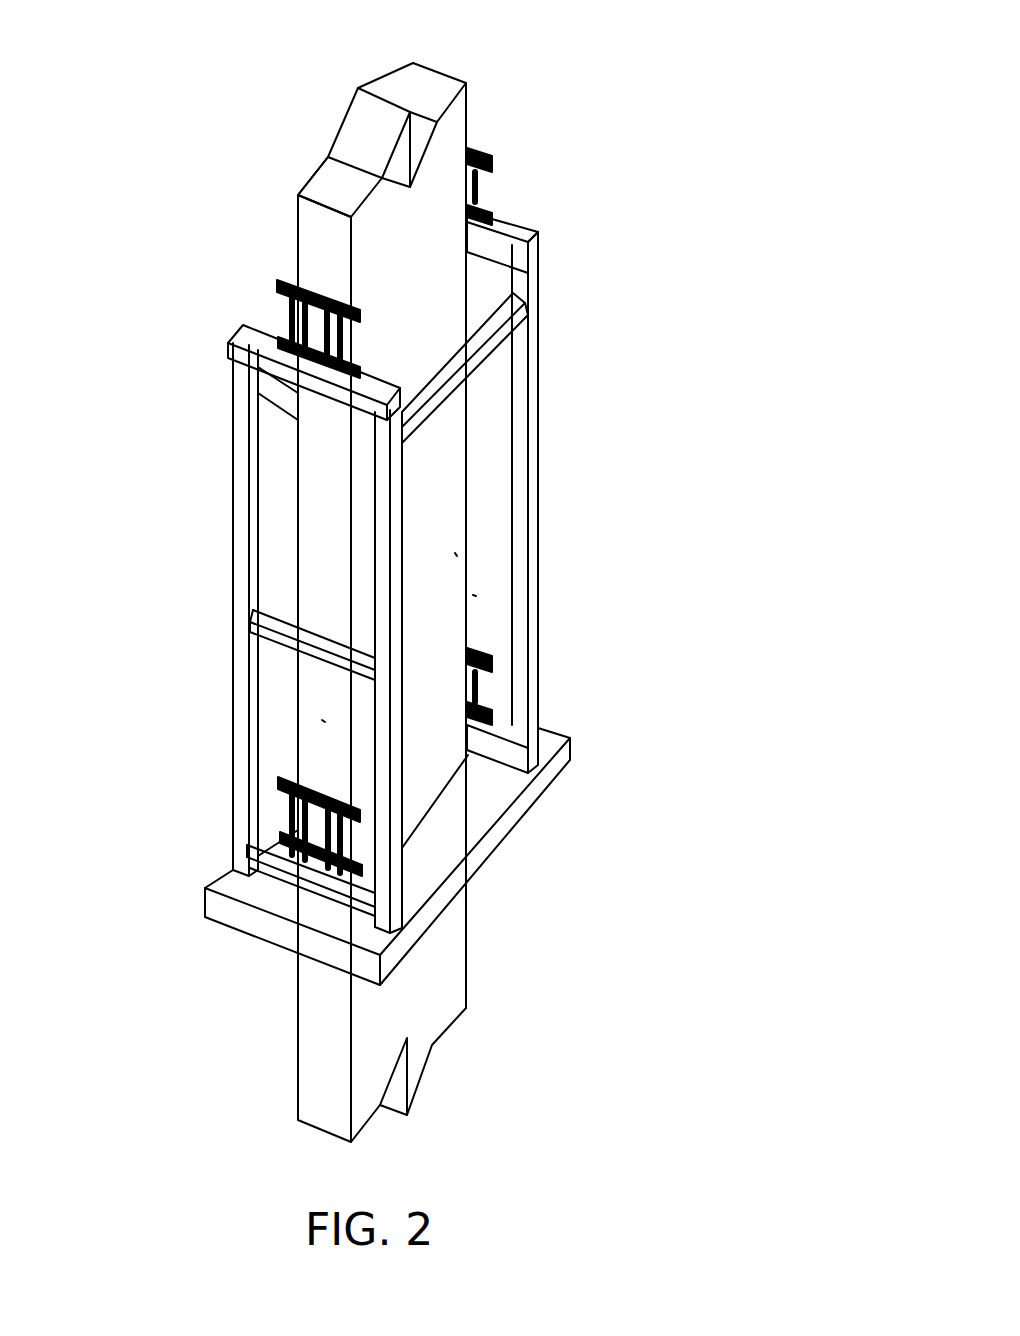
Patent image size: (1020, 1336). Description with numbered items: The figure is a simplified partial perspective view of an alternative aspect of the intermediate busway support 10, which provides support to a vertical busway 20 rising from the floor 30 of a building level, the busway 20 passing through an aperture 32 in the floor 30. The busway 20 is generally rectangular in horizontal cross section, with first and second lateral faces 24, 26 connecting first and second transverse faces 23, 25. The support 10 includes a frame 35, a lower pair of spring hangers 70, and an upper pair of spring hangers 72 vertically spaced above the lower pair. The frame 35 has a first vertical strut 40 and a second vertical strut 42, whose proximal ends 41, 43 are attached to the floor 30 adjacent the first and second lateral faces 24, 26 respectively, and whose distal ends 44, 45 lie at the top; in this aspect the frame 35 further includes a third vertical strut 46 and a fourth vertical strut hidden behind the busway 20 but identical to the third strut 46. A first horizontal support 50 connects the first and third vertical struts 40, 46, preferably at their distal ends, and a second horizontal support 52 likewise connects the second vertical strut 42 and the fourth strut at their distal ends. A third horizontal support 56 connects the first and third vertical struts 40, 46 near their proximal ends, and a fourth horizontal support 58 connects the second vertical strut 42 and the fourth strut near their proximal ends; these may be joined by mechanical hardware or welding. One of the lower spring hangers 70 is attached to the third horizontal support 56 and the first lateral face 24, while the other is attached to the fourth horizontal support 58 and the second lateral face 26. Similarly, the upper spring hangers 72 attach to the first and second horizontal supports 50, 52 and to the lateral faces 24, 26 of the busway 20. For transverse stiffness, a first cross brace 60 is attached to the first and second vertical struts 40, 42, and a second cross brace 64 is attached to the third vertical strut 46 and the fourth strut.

The intermediate busway support 10 is at (307, 87).
The vertical busway 20 is at (450, 76).
The first transverse face 23 is at (455, 553).
The first lateral face 24 is at (327, 722).
The second transverse face 25 is at (305, 188).
The second lateral face 26 is at (473, 595).
The floor 30 is at (468, 833).
The aperture 32 is at (288, 877).
The frame 35 is at (640, 446).
The first vertical strut 40 is at (385, 838).
The proximal end of first vertical strut 41 is at (405, 893).
The second vertical strut 42 is at (536, 465).
The proximal end of second vertical strut 43 is at (527, 757).
The distal end of first vertical strut 44 is at (397, 447).
The distal end of second vertical strut 45 is at (535, 250).
The third vertical strut 46 is at (243, 740).
The first horizontal support 50 is at (243, 332).
The second horizontal support 52 is at (506, 225).
The third horizontal support 56 is at (267, 842).
The fourth horizontal support 58 is at (498, 727).
The first cross brace 60 is at (490, 333).
The second cross brace 64 is at (262, 395).
The lower pair of spring hangers 70 is at (360, 877).
The upper pair of spring hangers 72 is at (285, 290).